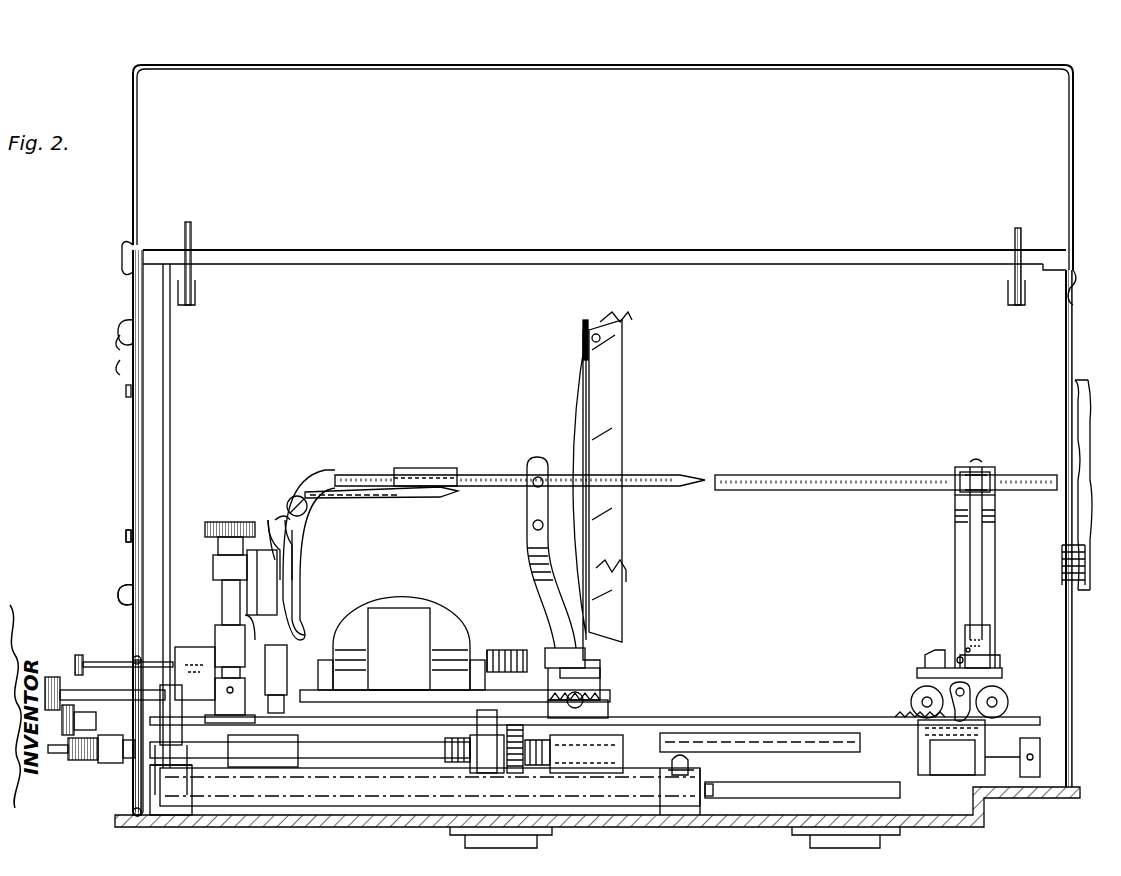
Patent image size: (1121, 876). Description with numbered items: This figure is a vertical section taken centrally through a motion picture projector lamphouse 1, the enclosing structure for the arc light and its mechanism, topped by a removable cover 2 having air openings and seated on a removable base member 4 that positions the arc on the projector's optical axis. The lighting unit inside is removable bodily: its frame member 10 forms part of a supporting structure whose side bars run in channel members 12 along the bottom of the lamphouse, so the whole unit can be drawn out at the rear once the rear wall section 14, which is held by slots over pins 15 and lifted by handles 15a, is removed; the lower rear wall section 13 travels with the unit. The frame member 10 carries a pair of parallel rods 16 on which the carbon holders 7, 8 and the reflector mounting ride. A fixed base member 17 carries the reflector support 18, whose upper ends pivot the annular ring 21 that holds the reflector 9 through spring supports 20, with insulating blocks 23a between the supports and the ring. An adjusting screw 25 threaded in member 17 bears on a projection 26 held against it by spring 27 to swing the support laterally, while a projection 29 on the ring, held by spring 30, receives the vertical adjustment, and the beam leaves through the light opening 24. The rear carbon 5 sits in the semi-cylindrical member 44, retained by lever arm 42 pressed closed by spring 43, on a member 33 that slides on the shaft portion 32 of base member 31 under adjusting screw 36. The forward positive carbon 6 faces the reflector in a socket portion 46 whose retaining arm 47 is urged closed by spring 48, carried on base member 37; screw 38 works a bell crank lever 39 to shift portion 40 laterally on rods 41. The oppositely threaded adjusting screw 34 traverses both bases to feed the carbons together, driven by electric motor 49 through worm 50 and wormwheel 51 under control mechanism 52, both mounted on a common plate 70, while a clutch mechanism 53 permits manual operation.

The lamphouse 1 is at (1072, 640).
The removable cover 2 is at (1070, 150).
The base member 4 is at (984, 824).
The carbon electrode 5 is at (500, 487).
The carbon electrode 6 is at (862, 475).
The carbon holder 7 is at (310, 476).
The carbon holder 8 is at (955, 520).
The reflector 9 is at (615, 397).
The frame member 10 is at (184, 800).
The channel member 12 is at (385, 780).
The rear wall section 13 is at (133, 785).
The rear wall section 14 is at (133, 447).
The pin 15 is at (128, 538).
The handle 15a is at (124, 588).
The rod 16 is at (895, 785).
The base member 17 is at (662, 740).
The reflector support 18 is at (530, 572).
The spring support 20 is at (630, 320).
The annular ring 21 is at (592, 512).
The insulating block 23a is at (592, 320).
The light opening 24 is at (1078, 405).
The adjusting screw 25 is at (583, 680).
The projection 26 is at (590, 690).
The spring 27 is at (586, 754).
The projection 29 is at (600, 703).
The spring 30 is at (608, 714).
The base member 31 is at (283, 757).
The shaft portion 32 is at (282, 645).
The vertically sliding member 33 is at (222, 632).
The adjusting screw 34 is at (460, 760).
The adjusting screw 36 is at (225, 605).
The base member 37 is at (962, 770).
The adjusting screw 38 is at (105, 720).
The bell crank lever 39 is at (960, 716).
The carbon support portion 40 is at (985, 682).
The rod 41 is at (915, 695).
The lever arm 42 is at (410, 500).
The spring 43 is at (300, 556).
The semi-cylindrical member 44 is at (457, 472).
The socket portion 46 is at (965, 468).
The retaining arm 47 is at (958, 493).
The spring 48 is at (978, 634).
The electric motor 49 is at (415, 610).
The worm 50 is at (510, 648).
The wormwheel 51 is at (507, 772).
The control mechanism 52 is at (205, 658).
The clutch mechanism 53 is at (545, 762).
The common plate 70 is at (320, 718).